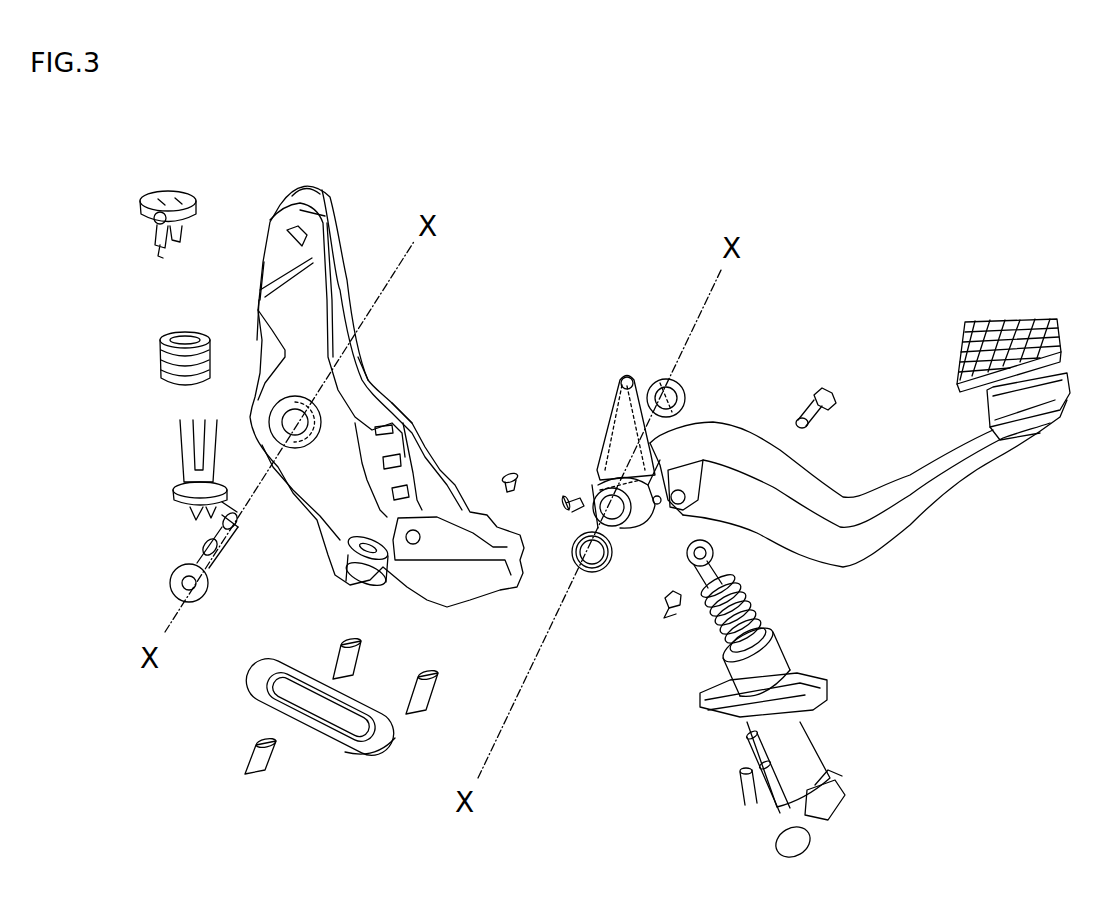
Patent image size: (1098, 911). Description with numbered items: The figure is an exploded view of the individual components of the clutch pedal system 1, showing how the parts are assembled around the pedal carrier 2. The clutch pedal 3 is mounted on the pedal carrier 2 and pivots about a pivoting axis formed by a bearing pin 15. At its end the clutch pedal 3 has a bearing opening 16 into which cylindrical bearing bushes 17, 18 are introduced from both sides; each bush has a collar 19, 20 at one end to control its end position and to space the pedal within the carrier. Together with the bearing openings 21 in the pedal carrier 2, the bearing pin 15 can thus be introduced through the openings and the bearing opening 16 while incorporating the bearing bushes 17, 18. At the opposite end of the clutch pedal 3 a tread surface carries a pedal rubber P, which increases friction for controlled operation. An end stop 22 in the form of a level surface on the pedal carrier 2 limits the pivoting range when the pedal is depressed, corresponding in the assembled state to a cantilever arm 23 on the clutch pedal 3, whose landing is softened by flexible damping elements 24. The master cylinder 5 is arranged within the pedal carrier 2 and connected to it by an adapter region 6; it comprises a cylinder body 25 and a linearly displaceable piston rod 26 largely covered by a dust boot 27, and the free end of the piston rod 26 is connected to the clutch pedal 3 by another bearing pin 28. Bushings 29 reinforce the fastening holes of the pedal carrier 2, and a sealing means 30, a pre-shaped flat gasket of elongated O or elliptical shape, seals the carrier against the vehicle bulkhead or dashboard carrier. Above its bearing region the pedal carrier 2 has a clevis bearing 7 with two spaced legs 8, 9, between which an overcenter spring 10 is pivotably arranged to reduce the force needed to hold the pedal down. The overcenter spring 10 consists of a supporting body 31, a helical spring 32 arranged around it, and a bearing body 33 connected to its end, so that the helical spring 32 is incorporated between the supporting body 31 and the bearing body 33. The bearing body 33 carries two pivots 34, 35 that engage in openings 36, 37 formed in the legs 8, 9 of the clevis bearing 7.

The clutch pedal system 1 is at (891, 212).
The pedal carrier 2 is at (378, 390).
The clutch pedal 3 is at (736, 420).
The master cylinder 5 is at (812, 718).
The adapter region 6 is at (418, 416).
The clevis bearing 7 is at (375, 237).
The leg 8 is at (305, 188).
The leg 9 is at (268, 253).
The overcenter spring 10 is at (147, 378).
The bearing pin 15 is at (180, 553).
The bearing opening 16 is at (600, 510).
The bearing bush 17 is at (603, 572).
The bearing bush 18 is at (652, 372).
The collar 19 is at (578, 570).
The collar 20 is at (666, 368).
The bearing opening 21 is at (284, 482).
The end stop 22 is at (497, 510).
The cantilever arm 23 is at (647, 530).
The damping element 24 is at (566, 500).
The cylinder body 25 is at (847, 807).
The piston rod 26 is at (718, 557).
The dust boot 27 is at (772, 616).
The bearing pin 28 is at (818, 386).
The bushing 29 is at (425, 672).
The sealing means 30 is at (393, 726).
The supporting body 31 is at (180, 477).
The helical spring 32 is at (213, 352).
The bearing body 33 is at (150, 205).
The pivot 34 is at (148, 227).
The pivot 35 is at (196, 184).
The opening 36 is at (339, 170).
The opening 37 is at (250, 290).
The pedal rubber P is at (1022, 318).